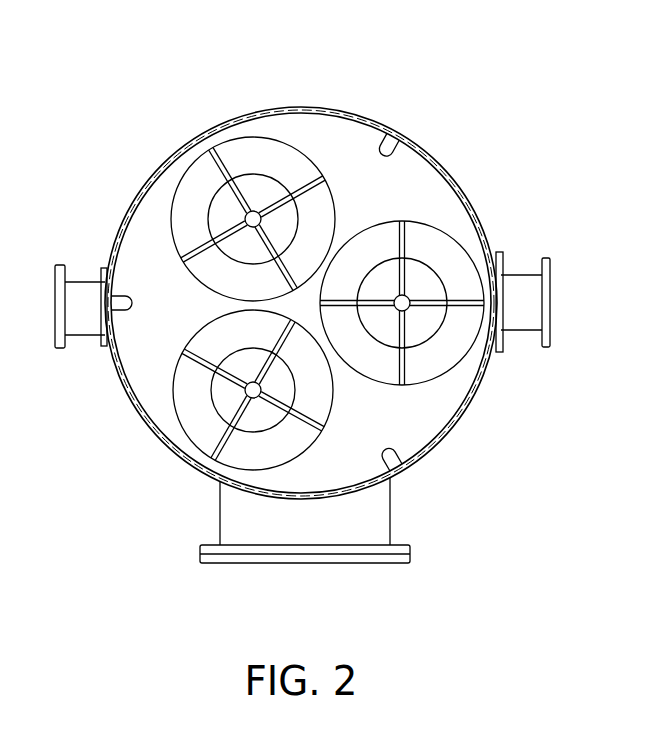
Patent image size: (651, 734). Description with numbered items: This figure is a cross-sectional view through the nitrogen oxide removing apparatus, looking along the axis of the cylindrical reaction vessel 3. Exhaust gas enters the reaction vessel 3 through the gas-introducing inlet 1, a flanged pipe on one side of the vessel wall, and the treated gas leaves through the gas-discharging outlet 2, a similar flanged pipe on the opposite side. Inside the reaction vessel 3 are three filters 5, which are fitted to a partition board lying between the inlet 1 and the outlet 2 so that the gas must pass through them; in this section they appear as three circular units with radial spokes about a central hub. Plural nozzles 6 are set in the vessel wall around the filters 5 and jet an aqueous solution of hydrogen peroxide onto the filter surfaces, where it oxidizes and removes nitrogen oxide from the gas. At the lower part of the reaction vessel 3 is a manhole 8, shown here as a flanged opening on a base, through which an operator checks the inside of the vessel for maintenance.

The gas-introducing inlet 1 is at (82, 292).
The gas-discharging outlet 2 is at (523, 288).
The reaction vessel 3 is at (461, 411).
The filters 5 is at (274, 157).
The nozzles 6 is at (112, 275).
The manhole 8 is at (240, 522).